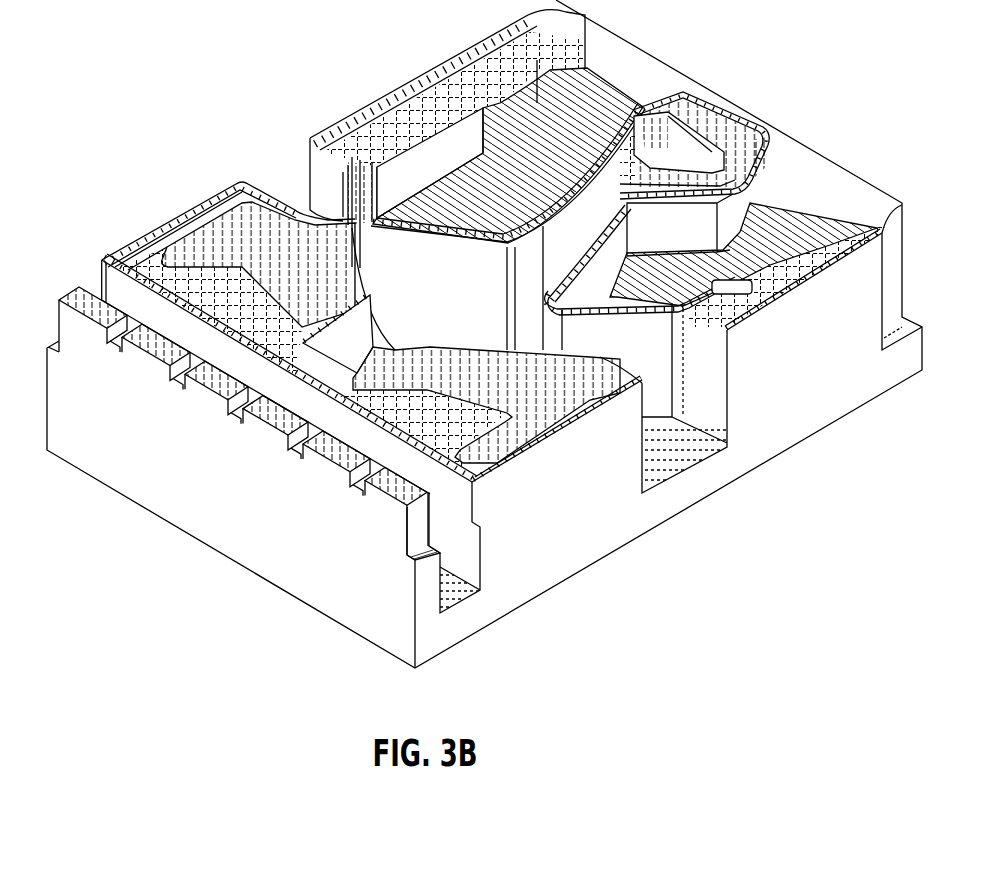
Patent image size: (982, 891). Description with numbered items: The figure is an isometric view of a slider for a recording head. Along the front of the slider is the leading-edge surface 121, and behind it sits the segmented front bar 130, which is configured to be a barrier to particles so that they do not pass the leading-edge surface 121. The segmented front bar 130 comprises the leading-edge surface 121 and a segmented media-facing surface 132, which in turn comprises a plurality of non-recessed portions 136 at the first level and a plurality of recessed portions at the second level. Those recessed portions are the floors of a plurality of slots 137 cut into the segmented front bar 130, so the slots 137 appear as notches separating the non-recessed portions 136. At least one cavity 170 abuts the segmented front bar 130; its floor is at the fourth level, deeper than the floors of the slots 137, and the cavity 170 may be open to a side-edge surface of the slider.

The leading-edge surface 121 is at (127, 477).
The segmented front bar 130 is at (52, 281).
The segmented media-facing surface 132 is at (394, 484).
The non-recessed portions 136 is at (233, 378).
The slots 137 is at (113, 349).
The cavity 170 is at (451, 595).